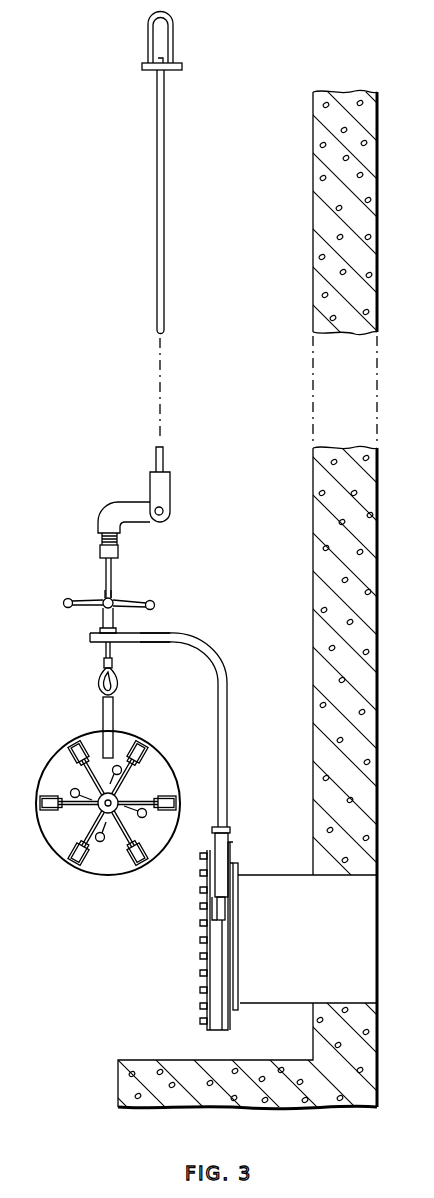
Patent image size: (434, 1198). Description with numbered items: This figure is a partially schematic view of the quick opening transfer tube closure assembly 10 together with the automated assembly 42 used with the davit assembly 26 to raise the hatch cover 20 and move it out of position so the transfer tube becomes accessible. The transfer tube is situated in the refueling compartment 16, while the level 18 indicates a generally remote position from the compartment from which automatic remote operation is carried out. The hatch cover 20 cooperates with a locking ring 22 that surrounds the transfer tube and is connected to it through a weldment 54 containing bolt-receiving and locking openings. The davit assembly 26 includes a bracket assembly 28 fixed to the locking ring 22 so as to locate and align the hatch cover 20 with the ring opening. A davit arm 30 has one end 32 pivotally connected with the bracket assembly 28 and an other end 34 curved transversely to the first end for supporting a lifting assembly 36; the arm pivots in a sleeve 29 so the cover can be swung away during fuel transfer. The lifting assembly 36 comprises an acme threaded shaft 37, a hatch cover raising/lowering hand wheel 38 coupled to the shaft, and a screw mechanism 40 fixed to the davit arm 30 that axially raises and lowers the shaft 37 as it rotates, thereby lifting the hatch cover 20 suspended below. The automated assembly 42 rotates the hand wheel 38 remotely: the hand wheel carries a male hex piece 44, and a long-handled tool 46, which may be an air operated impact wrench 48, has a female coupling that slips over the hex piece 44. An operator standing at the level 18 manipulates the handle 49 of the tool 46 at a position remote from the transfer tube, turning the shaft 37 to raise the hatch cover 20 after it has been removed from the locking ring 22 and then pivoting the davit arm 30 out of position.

The quick opening transfer tube closure assembly 10 is at (60, 848).
The refueling compartment 16 is at (244, 249).
The level 18 is at (352, 92).
The hatch cover 20 is at (72, 745).
The locking ring 22 is at (210, 1020).
The davit assembly 26 is at (202, 655).
The bracket assembly 28 is at (213, 889).
The sleeve 29 is at (225, 895).
The davit arm 30 is at (228, 683).
The one end of davit arm 32 is at (228, 752).
The other end of davit arm 34 is at (160, 645).
The lifting assembly 36 is at (95, 625).
The acme threaded shaft 37 is at (105, 573).
The hatch cover raising/lowering hand wheel 38 is at (68, 598).
The screw mechanism 40 is at (118, 633).
The automated assembly 42 is at (171, 514).
The male hex piece 44 is at (118, 550).
The long-handled tool 46 is at (164, 129).
The air operated impact wrench 48 is at (120, 502).
The handle 49 is at (173, 22).
The weldment 54 is at (232, 1028).